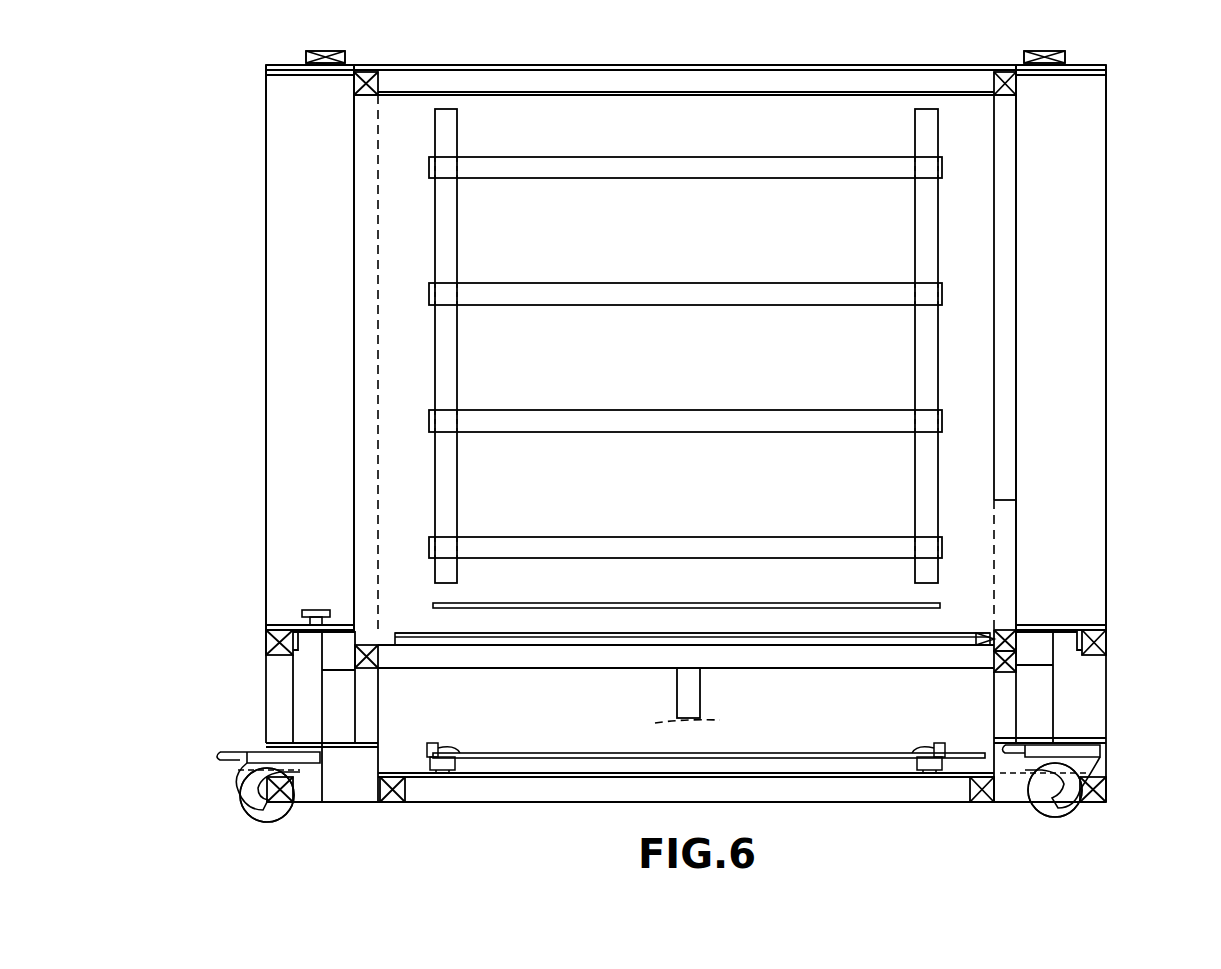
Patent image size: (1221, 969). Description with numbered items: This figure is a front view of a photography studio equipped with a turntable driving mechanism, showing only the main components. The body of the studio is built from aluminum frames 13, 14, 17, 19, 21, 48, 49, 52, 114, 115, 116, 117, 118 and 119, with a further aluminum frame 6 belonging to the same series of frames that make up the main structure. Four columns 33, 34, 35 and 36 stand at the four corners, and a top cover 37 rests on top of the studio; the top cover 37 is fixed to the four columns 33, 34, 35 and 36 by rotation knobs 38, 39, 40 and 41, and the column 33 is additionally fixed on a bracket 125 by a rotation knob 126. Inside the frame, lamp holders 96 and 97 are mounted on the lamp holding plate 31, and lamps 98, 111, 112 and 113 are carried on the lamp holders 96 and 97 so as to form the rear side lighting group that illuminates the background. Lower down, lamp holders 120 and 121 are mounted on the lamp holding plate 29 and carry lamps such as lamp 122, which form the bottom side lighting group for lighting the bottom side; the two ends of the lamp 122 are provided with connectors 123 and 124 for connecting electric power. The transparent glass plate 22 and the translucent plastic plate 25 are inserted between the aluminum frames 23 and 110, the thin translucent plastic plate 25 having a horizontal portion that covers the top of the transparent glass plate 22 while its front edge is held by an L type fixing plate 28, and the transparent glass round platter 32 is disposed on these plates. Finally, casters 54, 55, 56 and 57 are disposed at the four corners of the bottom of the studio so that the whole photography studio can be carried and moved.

The aluminum frame 6 is at (537, 655).
The aluminum frame 13 is at (578, 80).
The aluminum frame 14 is at (685, 80).
The aluminum frame 17 is at (1010, 672).
The aluminum frame 19 is at (1107, 641).
The aluminum frame 21 is at (1002, 78).
The transparent glass plate 22 is at (848, 640).
The aluminum frame 23 is at (990, 634).
The translucent plastic plate 25 is at (792, 637).
The L type fixing plate 28 is at (736, 90).
The lamp holding plate 29 is at (838, 778).
The lamp holding plate 31 is at (408, 349).
The transparent glass round platter 32 is at (750, 606).
The column 33 is at (282, 295).
The column 34 is at (310, 347).
The column 35 is at (1100, 302).
The column 36 is at (1061, 347).
The top cover 37 is at (848, 78).
The rotation knob 38 is at (320, 51).
The rotation knob 39 is at (325, 57).
The rotation knob 40 is at (1060, 40).
The rotation knob 41 is at (1044, 57).
The aluminum frame 48 is at (1005, 437).
The aluminum frame 49 is at (366, 438).
The aluminum frame 52 is at (366, 668).
The caster 54 is at (1072, 806).
The caster 55 is at (258, 812).
The caster 56 is at (1055, 790).
The caster 57 is at (267, 795).
The lamp holder 96 is at (926, 120).
The lamp holder 97 is at (446, 120).
The lamp 98 is at (792, 165).
The aluminum frame 110 is at (372, 636).
The lamp 111 is at (752, 296).
The lamp 112 is at (752, 422).
The lamp 113 is at (752, 547).
The aluminum frame 114 is at (985, 806).
The aluminum frame 115 is at (392, 806).
The aluminum frame 116 is at (290, 805).
The aluminum frame 117 is at (1107, 785).
The aluminum frame 118 is at (364, 75).
The aluminum frame 119 is at (272, 641).
The lamp holder 120 is at (935, 773).
The lamp holder 121 is at (438, 773).
The lamp 122 is at (790, 760).
The connector 123 is at (470, 755).
The connector 124 is at (912, 755).
The bracket 125 is at (340, 640).
The rotation knob 126 is at (314, 608).